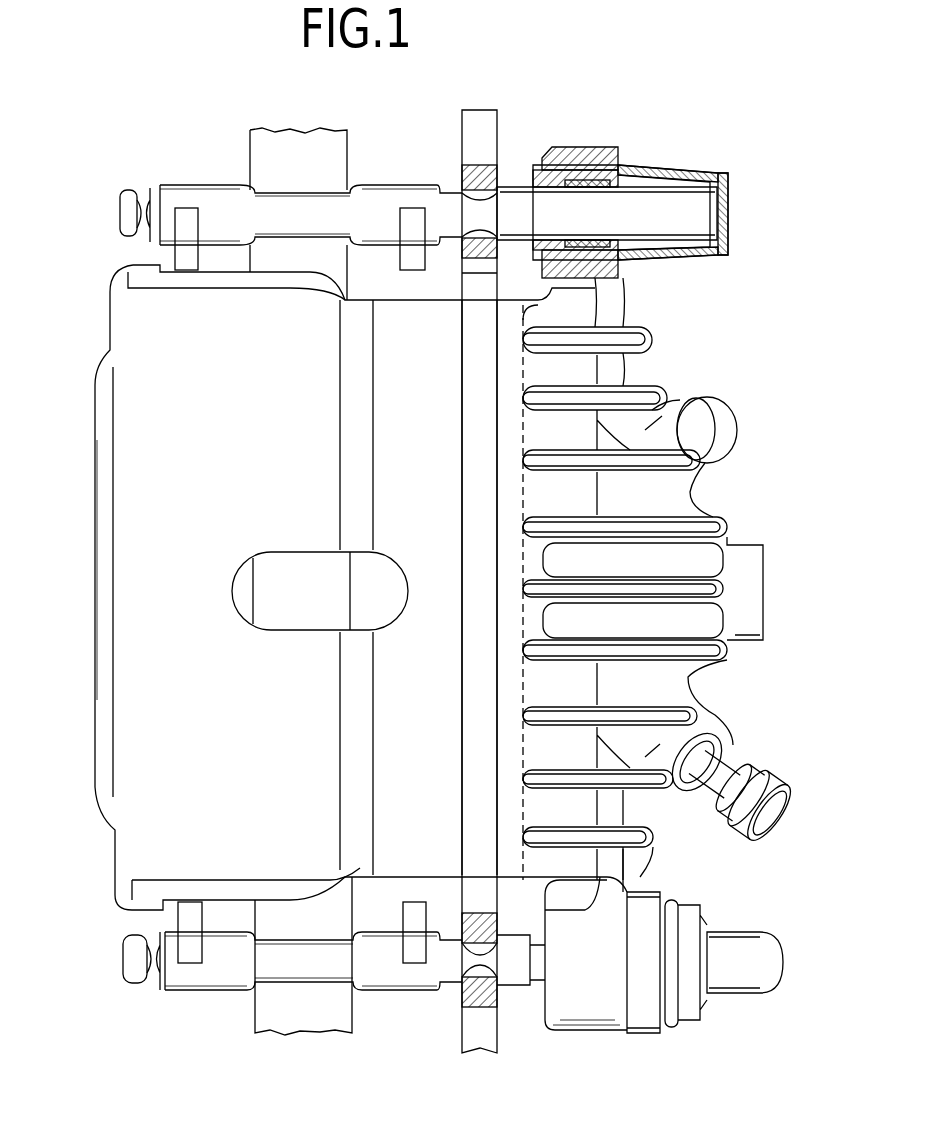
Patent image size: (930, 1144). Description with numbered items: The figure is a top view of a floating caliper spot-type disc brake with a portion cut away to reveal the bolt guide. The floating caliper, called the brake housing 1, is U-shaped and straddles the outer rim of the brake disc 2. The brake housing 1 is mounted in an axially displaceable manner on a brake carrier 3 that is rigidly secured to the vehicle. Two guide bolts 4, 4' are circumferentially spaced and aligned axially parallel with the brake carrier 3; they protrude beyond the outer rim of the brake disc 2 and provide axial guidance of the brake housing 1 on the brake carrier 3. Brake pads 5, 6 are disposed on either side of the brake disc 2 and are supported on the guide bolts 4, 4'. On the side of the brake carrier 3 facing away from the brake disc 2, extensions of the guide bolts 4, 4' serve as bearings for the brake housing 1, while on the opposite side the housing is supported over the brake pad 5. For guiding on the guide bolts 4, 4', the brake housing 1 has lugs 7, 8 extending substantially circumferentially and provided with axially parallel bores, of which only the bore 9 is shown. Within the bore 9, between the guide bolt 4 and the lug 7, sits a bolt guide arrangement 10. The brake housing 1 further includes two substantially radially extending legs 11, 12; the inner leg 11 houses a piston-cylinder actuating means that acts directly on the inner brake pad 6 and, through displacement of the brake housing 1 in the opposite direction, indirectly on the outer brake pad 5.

The brake housing 1 is at (140, 355).
The brake disc 2 is at (292, 135).
The brake carrier 3 is at (470, 130).
The guide bolt 4 is at (418, 201).
The guide bolt 4' is at (334, 979).
The brake pad 5 is at (190, 196).
The brake pad 6 is at (416, 196).
The lug 7 is at (588, 157).
The lug 8 is at (572, 1005).
The bore 9 is at (568, 160).
The bolt guide arrangement 10 is at (667, 147).
The inner leg 11 is at (624, 373).
The outer leg 12 is at (97, 435).